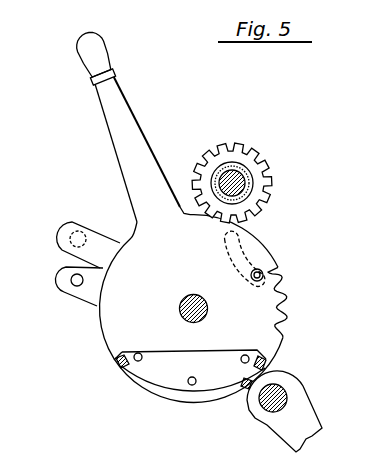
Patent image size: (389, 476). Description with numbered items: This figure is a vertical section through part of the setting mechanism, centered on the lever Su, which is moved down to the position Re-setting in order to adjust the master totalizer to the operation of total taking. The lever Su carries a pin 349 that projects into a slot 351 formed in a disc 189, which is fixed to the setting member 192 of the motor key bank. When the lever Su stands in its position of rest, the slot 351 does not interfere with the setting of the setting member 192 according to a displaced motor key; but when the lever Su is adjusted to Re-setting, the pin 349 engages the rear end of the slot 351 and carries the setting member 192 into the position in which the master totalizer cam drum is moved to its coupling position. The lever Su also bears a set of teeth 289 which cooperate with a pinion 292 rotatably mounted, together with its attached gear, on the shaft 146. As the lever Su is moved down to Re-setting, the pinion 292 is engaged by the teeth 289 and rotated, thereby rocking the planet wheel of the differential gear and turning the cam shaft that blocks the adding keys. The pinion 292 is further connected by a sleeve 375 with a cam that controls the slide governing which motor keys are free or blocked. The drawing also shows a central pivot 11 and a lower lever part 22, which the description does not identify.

The lever Su is at (107, 45).
The shaft 146 is at (242, 182).
The sleeve 375 is at (254, 183).
The pinion 292 is at (269, 191).
The slot 351 is at (250, 258).
The pin 349 is at (263, 272).
The set of teeth 289 is at (286, 302).
The pivot shaft 11 is at (179, 309).
The setting member 192 is at (68, 228).
The disc 189 is at (72, 287).
The shaft lever 22 is at (284, 394).